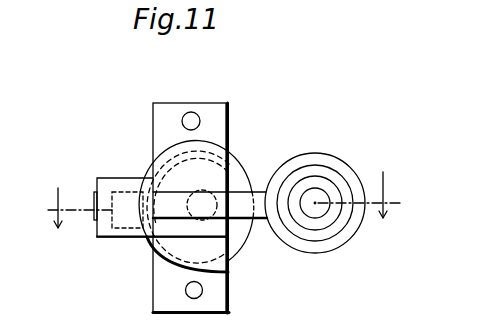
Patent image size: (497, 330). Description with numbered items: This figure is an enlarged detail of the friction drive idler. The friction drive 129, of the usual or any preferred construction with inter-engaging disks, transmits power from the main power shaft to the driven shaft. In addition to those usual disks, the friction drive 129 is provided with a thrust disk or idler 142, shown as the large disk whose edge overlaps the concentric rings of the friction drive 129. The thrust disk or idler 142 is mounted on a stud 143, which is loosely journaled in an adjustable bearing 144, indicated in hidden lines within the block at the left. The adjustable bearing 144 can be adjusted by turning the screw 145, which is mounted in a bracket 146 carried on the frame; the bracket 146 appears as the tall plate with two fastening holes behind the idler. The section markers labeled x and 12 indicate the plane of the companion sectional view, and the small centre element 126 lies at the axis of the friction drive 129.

The section line x-x 12 is at (226, 189).
The pivot pin 126 is at (326, 214).
The friction drive 129 is at (251, 239).
The thrust disk or idler 142 is at (207, 189).
The stud 143 is at (200, 210).
The adjustable bearing 144 is at (130, 213).
The screw 145 is at (92, 229).
The bracket 146 is at (172, 294).